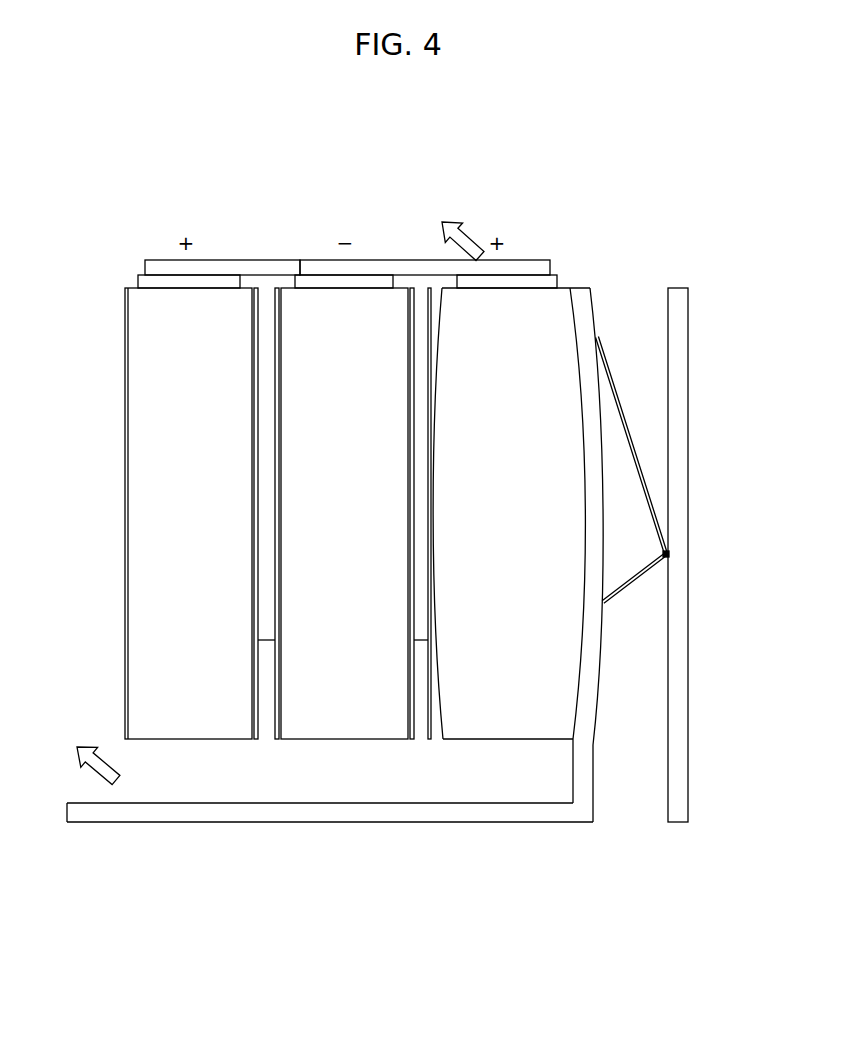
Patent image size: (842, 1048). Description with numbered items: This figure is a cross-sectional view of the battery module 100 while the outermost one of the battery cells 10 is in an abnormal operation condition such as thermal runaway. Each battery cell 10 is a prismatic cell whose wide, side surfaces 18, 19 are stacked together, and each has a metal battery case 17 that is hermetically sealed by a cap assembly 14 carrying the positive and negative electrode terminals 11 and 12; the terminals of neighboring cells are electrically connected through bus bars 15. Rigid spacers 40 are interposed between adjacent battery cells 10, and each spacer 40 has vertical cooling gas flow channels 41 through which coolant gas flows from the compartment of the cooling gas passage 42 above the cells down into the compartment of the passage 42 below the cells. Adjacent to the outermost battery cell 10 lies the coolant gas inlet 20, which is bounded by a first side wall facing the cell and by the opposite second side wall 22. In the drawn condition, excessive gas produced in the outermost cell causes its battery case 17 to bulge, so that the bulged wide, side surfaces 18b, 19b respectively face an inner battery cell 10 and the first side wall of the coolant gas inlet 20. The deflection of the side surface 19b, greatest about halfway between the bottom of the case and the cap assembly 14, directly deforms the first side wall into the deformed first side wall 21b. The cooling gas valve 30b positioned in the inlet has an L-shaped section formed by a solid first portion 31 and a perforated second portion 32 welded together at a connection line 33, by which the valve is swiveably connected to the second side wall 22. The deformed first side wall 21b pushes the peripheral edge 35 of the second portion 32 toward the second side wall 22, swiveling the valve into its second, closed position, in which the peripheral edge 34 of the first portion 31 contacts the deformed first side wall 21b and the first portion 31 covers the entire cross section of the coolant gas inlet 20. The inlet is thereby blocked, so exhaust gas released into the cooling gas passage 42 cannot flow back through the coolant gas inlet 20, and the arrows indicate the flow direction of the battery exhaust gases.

The battery module 100 is at (122, 205).
The battery cell 10 is at (176, 524).
The positive electrode terminal 11 is at (222, 280).
The negative electrode terminal 12 is at (373, 283).
The bus bar 15 is at (525, 262).
The cooling gas passage 42 is at (286, 240).
The cap assembly 14 is at (130, 287).
The battery case 17 is at (124, 606).
The wide side surface 18 is at (124, 418).
The wide side surface 19 is at (256, 338).
The vertical cooling gas flow channel 41 is at (343, 630).
The rigid spacer 40 is at (253, 700).
The bulged wide side surface 18b is at (438, 700).
The bulged wide side surface 19b is at (580, 684).
The coolant gas inlet 20 is at (625, 779).
The deformed first side wall 21b is at (594, 785).
The second side wall 22 is at (689, 730).
The cooling gas valve 30b is at (676, 471).
The first portion 31 is at (625, 418).
The second portion 32 is at (637, 582).
The connection line 33 is at (665, 549).
The peripheral edge 34 is at (598, 336).
The peripheral edge 35 is at (604, 603).